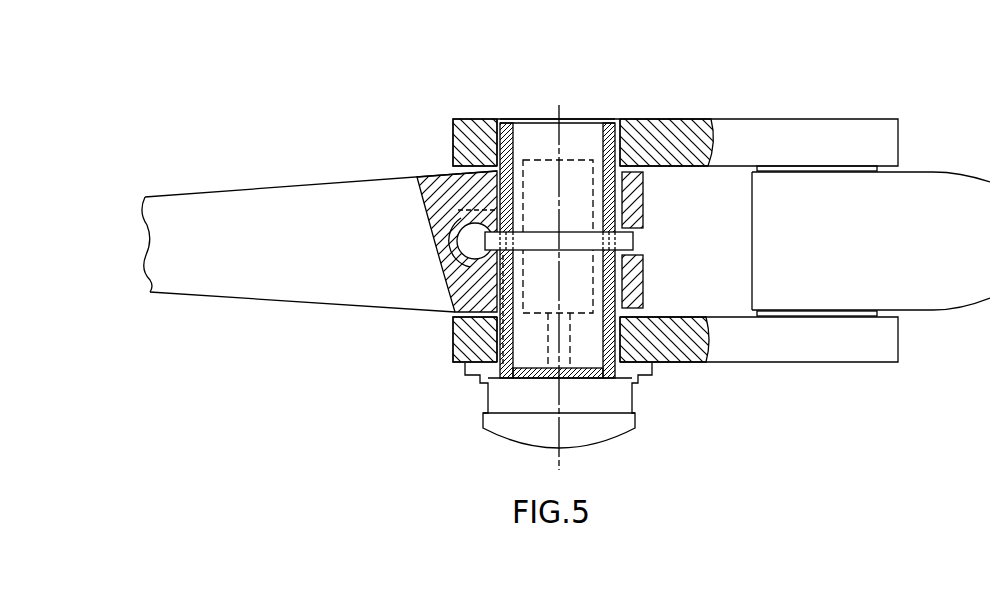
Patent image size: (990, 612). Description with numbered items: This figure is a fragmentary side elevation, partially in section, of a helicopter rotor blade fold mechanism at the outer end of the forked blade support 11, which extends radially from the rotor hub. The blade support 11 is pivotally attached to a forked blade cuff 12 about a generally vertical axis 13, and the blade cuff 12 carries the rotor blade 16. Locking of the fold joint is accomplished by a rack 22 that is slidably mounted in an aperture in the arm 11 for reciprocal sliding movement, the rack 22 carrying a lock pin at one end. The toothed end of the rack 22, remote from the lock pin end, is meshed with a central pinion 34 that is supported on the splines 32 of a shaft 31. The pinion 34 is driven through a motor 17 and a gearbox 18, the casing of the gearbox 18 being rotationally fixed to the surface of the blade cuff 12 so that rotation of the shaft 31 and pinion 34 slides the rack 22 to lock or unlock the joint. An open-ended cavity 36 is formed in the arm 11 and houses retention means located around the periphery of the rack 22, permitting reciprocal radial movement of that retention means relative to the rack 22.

The forked blade support 11 is at (289, 227).
The blade cuff 12 is at (793, 132).
The vertical axis 13 is at (556, 459).
The rotor blade 16 is at (928, 223).
The motor 17 is at (570, 173).
The gearbox 18 is at (617, 425).
The rack 22 is at (458, 232).
The shaft 31 is at (530, 120).
The splines 32 is at (620, 265).
The central pinion 34 is at (633, 241).
The open-ended cavity 36 is at (455, 218).